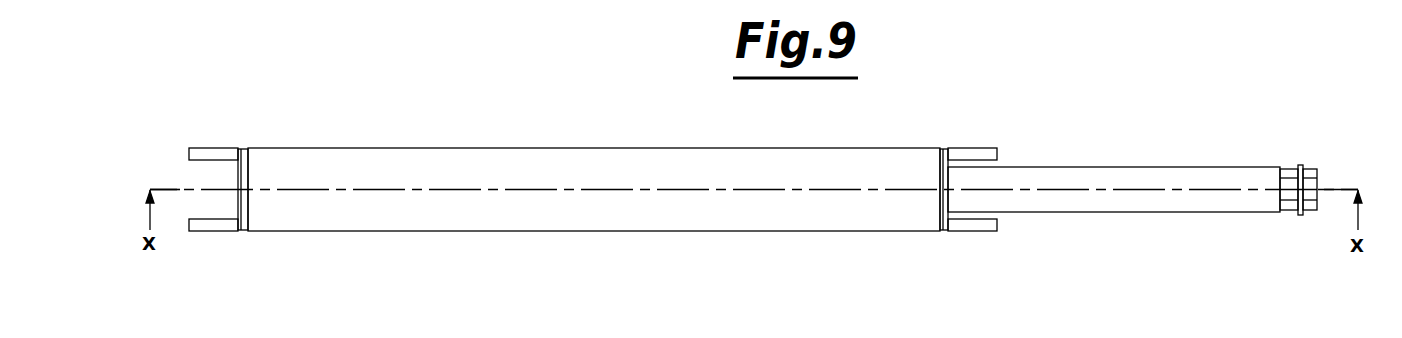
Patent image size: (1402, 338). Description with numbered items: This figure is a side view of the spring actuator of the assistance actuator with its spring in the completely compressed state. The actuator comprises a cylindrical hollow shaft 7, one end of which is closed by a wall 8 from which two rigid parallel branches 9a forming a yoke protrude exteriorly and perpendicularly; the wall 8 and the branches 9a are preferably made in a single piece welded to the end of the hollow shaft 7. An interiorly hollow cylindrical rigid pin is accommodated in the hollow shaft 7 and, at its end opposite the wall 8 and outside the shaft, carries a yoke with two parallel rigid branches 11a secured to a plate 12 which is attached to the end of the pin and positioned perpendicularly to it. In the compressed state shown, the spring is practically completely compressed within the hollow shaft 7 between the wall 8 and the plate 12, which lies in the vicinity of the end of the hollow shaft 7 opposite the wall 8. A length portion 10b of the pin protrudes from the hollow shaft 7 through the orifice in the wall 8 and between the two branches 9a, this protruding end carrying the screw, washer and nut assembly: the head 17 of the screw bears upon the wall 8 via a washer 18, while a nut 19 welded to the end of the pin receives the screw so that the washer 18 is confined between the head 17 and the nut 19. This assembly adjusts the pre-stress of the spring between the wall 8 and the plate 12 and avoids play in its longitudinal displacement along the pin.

The cylindrical hollow shaft 7 is at (470, 160).
The wall 8 is at (943, 150).
The rigid parallel branches 9a is at (980, 153).
The length portion of the pin 10b is at (1130, 201).
The parallel rigid branches 11a is at (208, 152).
The plate 12 is at (247, 180).
The head 17 is at (1317, 184).
The washer 18 is at (1301, 168).
The nut 19 is at (1290, 207).